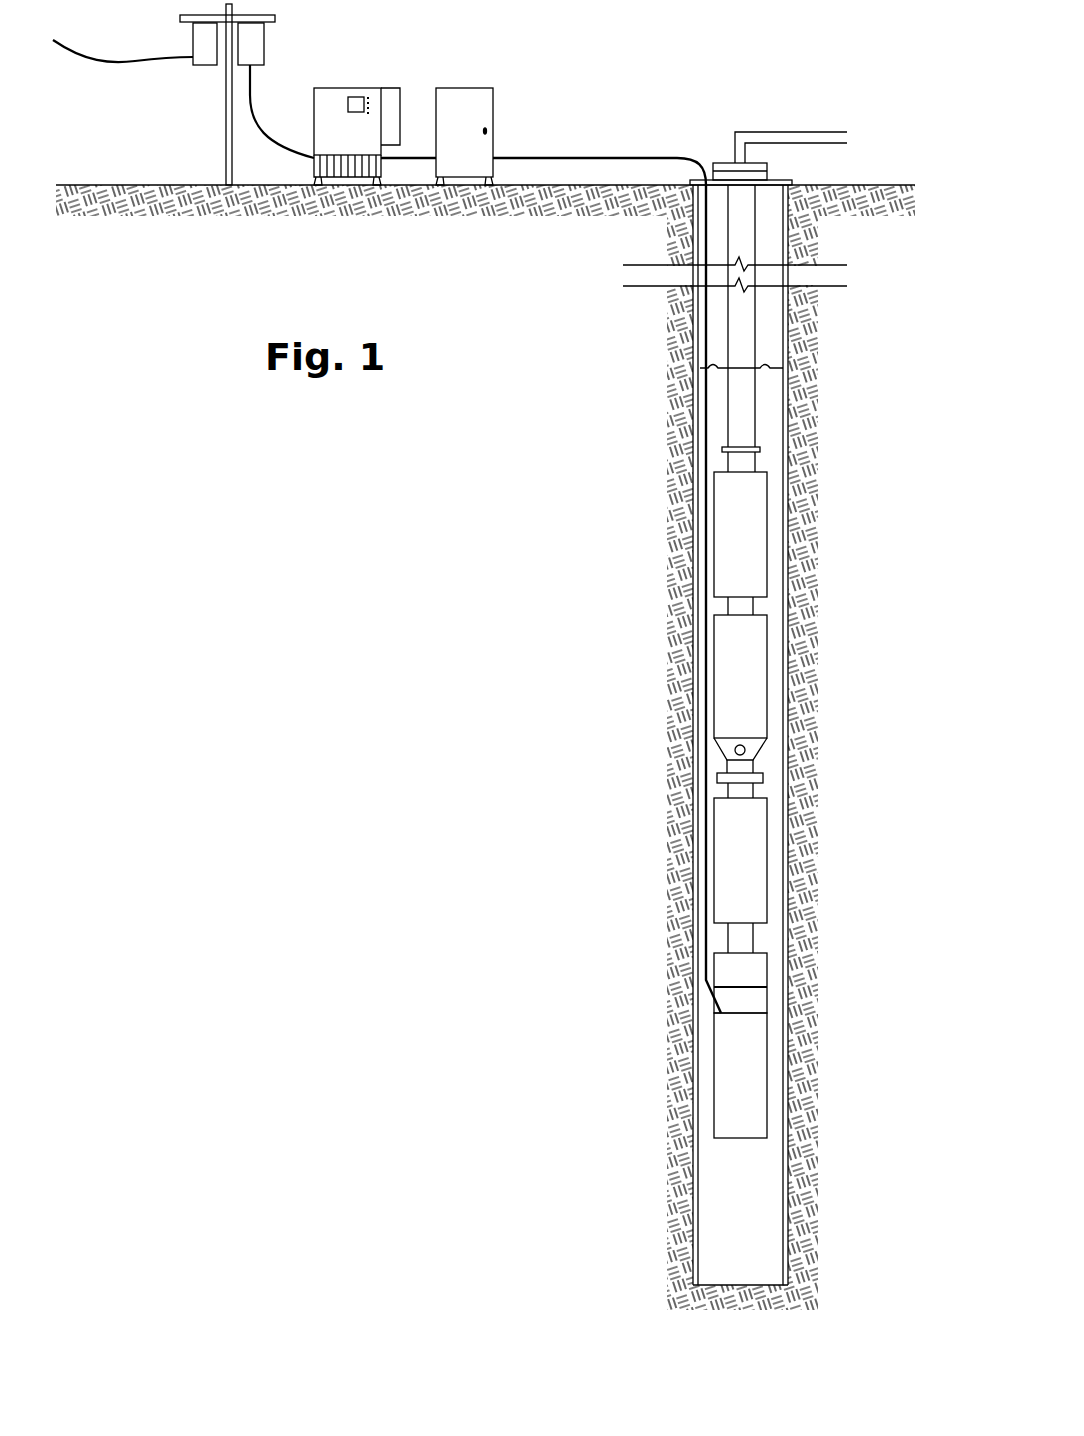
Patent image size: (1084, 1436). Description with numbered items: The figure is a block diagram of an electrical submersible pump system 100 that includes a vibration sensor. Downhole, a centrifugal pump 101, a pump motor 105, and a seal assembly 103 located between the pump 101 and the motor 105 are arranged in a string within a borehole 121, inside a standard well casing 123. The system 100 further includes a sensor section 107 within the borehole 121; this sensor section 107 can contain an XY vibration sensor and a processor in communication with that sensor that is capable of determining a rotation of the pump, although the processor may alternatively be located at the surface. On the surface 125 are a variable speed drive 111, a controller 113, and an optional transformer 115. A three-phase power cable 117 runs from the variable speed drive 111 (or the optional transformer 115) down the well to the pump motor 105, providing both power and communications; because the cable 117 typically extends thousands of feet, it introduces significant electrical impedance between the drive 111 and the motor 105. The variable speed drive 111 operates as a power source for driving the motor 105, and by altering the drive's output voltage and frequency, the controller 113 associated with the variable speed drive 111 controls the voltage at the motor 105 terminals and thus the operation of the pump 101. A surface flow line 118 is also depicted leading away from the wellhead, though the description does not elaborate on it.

The electrical submersible pump system 100 is at (775, 58).
The centrifugal pump 101 is at (745, 648).
The seal assembly 103 is at (733, 853).
The pump motor 105 is at (735, 1027).
The sensor section 107 is at (728, 532).
The variable speed drive 111 is at (343, 87).
The controller 113 is at (390, 88).
The transformer 115 is at (485, 88).
The three-phase power cable 117 is at (553, 157).
The production flow line 118 is at (808, 132).
The borehole 121 is at (723, 1205).
The well casing 123 is at (705, 1080).
The surface 125 is at (865, 185).